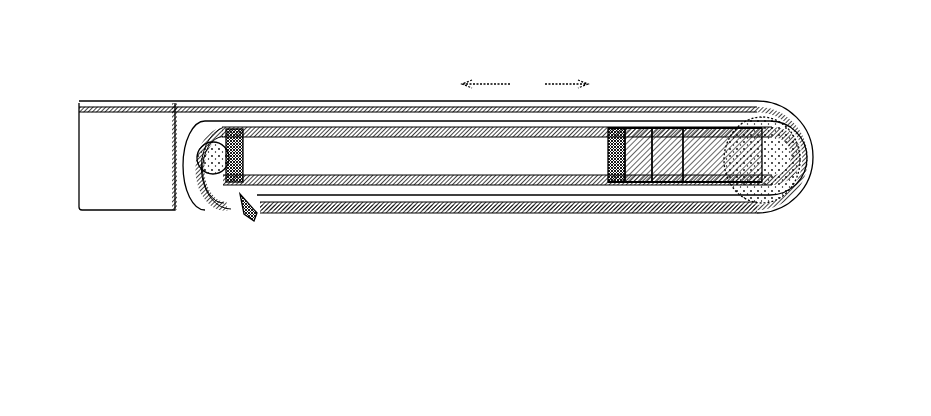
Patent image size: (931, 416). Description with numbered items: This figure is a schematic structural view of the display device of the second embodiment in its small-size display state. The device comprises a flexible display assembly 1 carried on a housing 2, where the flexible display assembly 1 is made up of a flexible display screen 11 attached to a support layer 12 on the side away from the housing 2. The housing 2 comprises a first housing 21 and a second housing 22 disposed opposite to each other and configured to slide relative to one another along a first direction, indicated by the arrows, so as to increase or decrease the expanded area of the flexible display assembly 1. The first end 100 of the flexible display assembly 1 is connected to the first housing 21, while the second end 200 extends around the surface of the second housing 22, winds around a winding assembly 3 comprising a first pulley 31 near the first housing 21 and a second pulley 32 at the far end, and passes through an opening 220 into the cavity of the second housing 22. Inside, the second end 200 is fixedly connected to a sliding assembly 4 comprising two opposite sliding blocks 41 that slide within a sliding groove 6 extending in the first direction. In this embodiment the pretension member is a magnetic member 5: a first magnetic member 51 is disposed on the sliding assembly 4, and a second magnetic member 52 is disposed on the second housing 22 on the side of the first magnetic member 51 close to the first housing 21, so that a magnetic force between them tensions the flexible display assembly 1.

The first end 100 is at (88, 101).
The flexible display assembly 1 is at (193, 54).
The flexible display screen 11 is at (133, 102).
The support layer 12 is at (171, 102).
The housing 2 is at (322, 80).
The first housing 21 is at (92, 175).
The second housing 22 is at (205, 212).
The opening 220 is at (241, 210).
The winding assembly 3 is at (410, 80).
The first pulley 31 is at (197, 134).
The second pulley 32 is at (822, 110).
The sliding assembly 4 is at (705, 253).
The sliding block 41 is at (642, 185).
The magnetic member 5 is at (680, 80).
The first magnetic member 51 is at (603, 184).
The second magnetic member 52 is at (250, 152).
The sliding groove 6 is at (437, 176).
The second end 200 is at (697, 167).